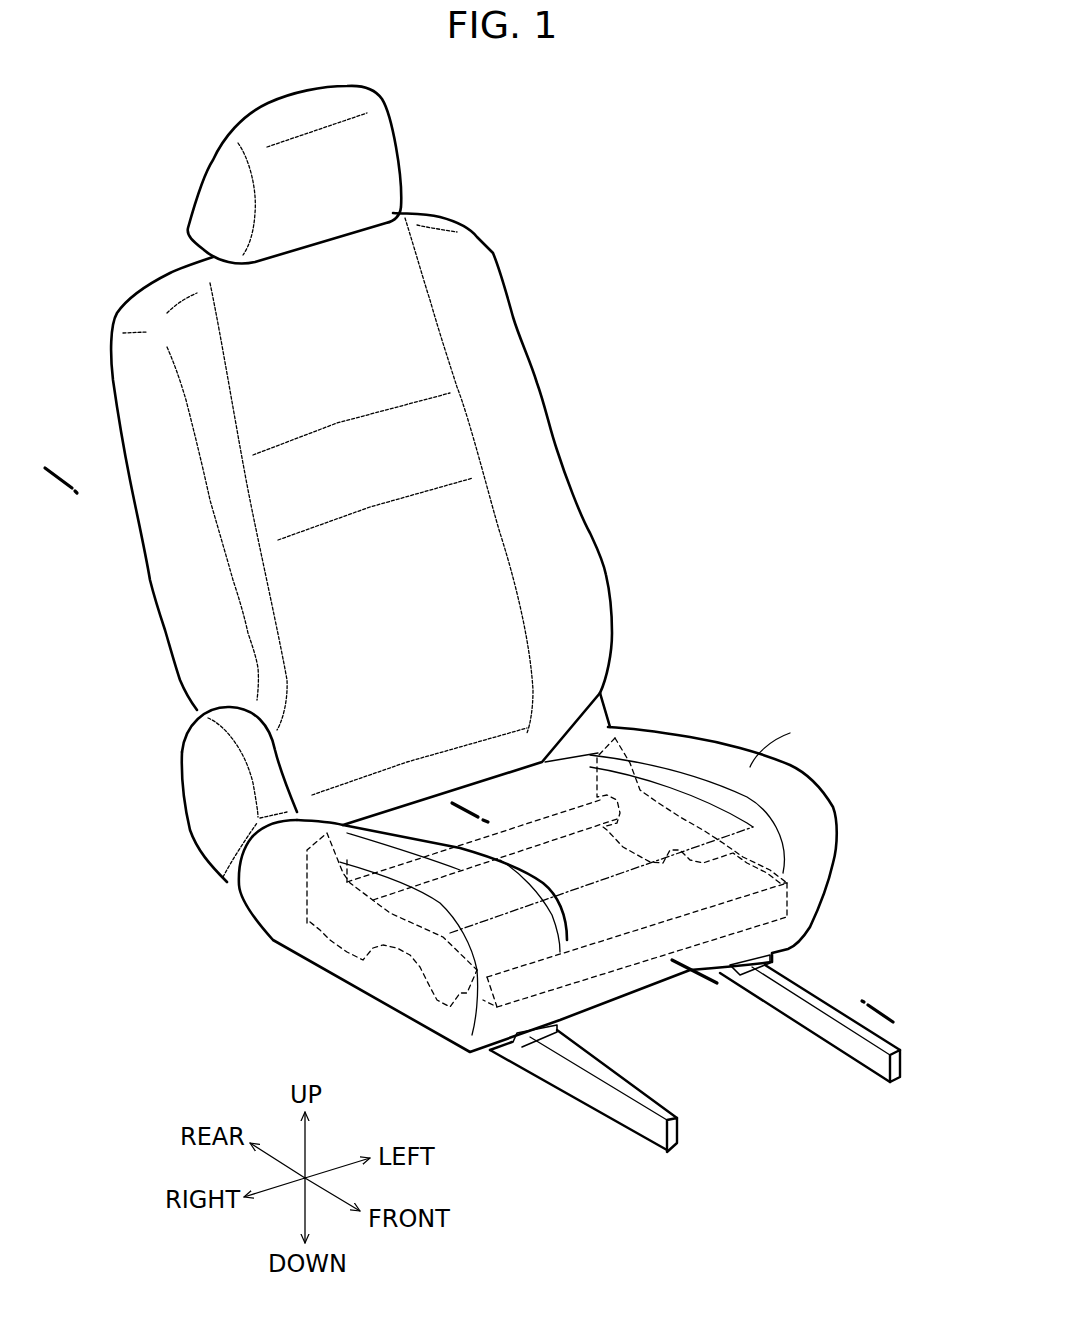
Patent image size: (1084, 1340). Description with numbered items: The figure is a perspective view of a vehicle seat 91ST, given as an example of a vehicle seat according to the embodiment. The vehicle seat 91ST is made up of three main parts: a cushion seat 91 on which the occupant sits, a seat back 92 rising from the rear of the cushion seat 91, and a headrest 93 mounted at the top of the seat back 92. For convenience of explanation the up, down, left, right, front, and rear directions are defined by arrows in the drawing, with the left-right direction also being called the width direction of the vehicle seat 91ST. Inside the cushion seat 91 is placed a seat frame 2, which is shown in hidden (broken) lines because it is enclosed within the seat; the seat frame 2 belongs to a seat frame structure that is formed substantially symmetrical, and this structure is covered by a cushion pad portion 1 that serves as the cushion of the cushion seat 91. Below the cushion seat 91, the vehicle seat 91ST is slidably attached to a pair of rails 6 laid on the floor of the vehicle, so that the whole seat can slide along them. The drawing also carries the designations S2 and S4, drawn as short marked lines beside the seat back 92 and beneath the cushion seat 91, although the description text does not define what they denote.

The cushion pad portion 1 is at (750, 768).
The seat frame 2 is at (310, 922).
The rails 6 is at (817, 997).
The cushion seat 91 is at (513, 833).
The vehicle seat 91ST is at (505, 619).
The seat back 92 is at (566, 438).
The headrest 93 is at (418, 148).
The reference line S2 is at (102, 458).
The reference line S4 is at (461, 805).